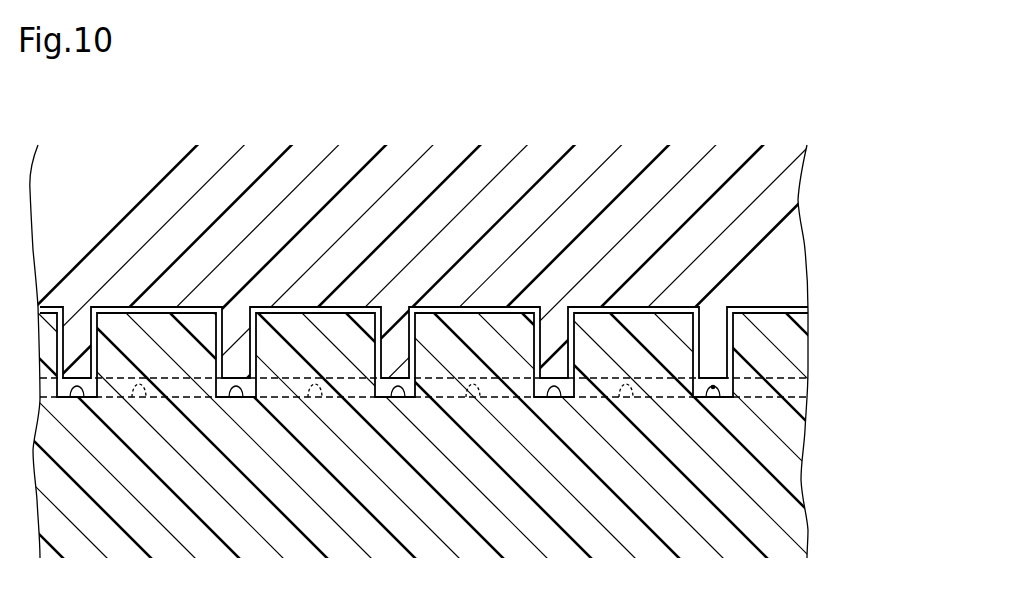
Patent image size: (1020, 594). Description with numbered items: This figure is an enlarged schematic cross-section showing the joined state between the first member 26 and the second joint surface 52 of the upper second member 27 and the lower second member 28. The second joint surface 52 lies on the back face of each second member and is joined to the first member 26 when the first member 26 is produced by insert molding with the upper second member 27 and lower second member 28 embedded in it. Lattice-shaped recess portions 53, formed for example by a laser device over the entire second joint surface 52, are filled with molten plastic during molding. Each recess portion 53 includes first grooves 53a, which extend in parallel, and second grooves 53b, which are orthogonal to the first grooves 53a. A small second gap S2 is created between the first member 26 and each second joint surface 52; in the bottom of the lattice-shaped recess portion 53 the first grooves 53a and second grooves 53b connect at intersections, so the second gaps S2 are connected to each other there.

The first member 26 is at (797, 203).
The upper second member 27 is at (510, 430).
The lower second member 28 is at (807, 437).
The second joint surface 52 is at (776, 312).
The recess portion 53 is at (653, 474).
The first groove 53a is at (83, 400).
The second groove 53b is at (143, 400).
The second gap S2 is at (714, 389).